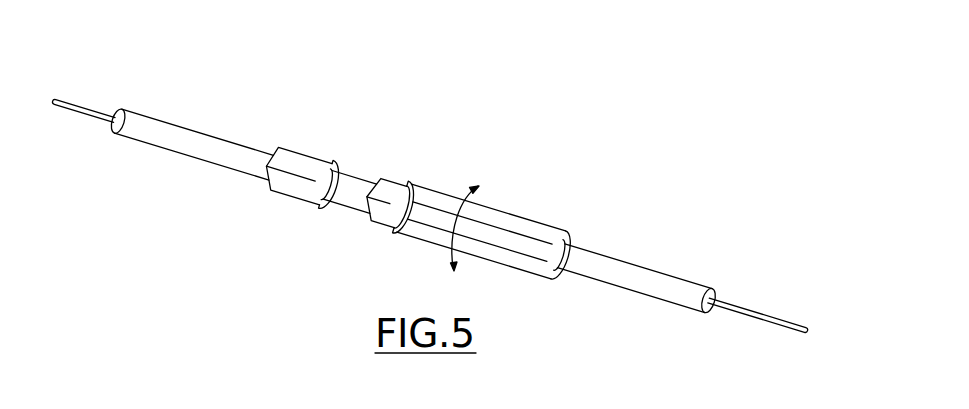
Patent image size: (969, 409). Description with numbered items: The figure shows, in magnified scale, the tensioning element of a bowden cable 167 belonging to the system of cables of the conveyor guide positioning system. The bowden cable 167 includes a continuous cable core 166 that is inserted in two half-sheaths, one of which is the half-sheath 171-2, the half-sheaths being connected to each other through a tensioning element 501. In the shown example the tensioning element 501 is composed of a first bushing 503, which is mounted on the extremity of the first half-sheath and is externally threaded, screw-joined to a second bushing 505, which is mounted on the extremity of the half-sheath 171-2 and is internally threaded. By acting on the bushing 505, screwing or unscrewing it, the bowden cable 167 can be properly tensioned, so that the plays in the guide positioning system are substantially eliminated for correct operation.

The cable core 166 is at (91, 108).
The bowden cable 167 is at (442, 141).
The half-sheath 171-2 is at (205, 160).
The tensioning element 501 is at (370, 151).
The first bushing 503 is at (304, 154).
The second bushing 505 is at (530, 225).